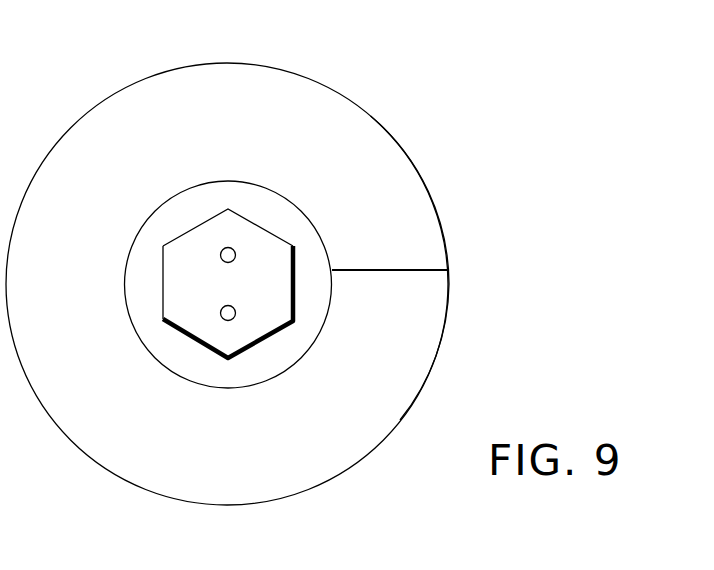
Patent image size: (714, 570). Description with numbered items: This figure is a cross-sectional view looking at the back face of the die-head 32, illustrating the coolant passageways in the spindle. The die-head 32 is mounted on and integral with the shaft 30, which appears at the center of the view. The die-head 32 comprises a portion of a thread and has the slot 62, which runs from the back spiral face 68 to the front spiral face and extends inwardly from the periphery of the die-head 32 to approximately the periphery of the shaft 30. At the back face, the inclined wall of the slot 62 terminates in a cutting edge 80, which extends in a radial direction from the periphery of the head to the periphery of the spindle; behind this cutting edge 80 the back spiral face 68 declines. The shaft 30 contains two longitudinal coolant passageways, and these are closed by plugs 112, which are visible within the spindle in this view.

The shaft 30 is at (128, 315).
The die-head 32 is at (450, 322).
The slot 62 is at (453, 272).
The back spiral face 68 is at (430, 244).
The cutting edge 80 is at (388, 270).
The plugs 112 is at (225, 262).